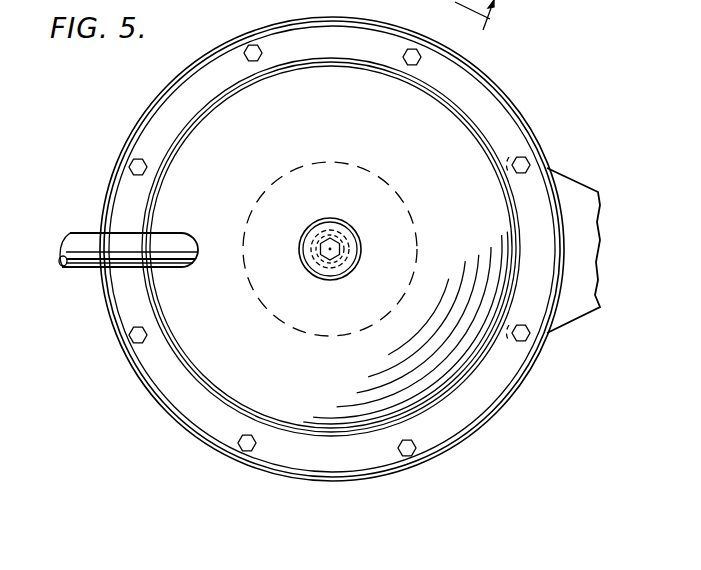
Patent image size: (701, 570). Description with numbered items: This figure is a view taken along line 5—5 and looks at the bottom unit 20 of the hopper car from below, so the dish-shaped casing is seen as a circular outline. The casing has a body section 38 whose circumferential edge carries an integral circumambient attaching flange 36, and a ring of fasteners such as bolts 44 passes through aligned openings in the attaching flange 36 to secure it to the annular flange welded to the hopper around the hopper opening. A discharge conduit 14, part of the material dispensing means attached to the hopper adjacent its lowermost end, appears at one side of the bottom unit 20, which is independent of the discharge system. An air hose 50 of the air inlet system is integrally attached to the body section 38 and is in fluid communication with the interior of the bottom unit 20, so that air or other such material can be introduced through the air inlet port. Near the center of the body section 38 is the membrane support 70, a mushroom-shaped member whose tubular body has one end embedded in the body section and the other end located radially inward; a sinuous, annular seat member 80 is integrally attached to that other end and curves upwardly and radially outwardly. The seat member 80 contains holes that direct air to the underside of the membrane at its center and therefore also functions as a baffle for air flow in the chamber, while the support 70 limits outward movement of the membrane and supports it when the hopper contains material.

The line 5— 5 is at (486, 15).
The discharge conduit 14 is at (582, 183).
The bottom unit 20 is at (545, 121).
The attaching flange 36 is at (480, 107).
The body section 38 is at (390, 107).
The bolts 44 is at (132, 165).
The air hose 50 is at (85, 248).
The membrane support 70 is at (346, 222).
The annular seat member 80 is at (406, 199).